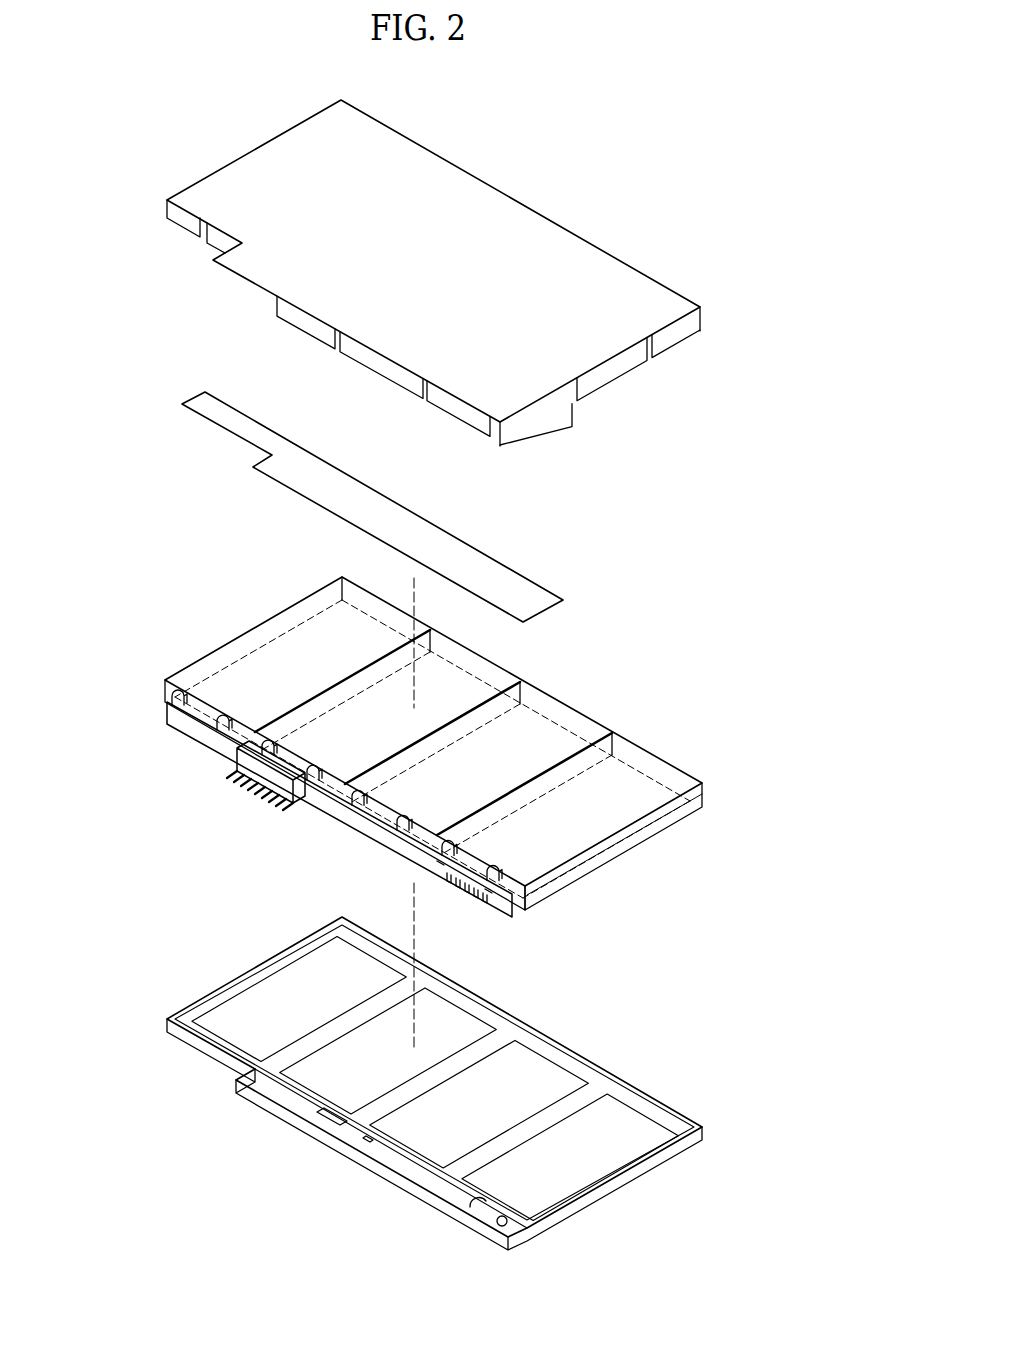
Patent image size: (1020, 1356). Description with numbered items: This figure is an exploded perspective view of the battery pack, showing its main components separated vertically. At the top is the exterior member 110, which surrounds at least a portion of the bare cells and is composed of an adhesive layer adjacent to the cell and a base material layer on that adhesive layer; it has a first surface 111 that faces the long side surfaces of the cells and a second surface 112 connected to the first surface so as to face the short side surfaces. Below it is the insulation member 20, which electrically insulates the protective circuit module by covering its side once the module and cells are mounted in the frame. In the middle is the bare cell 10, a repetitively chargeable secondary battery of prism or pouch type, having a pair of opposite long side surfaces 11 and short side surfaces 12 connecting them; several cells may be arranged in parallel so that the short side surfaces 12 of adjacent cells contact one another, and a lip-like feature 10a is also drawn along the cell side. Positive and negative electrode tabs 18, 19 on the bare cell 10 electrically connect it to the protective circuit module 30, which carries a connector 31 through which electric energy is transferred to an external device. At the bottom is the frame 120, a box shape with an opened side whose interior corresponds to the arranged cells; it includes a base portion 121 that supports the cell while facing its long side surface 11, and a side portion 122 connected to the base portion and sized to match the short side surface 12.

The exterior member 110 is at (435, 273).
The first surface 111 is at (615, 283).
The second surface 112 is at (620, 367).
The insulation member 20 is at (528, 594).
The bare cell 10 is at (418, 775).
The long side surface 11 is at (612, 803).
The frame lip 10a is at (598, 854).
The short side surface 12 is at (532, 914).
The positive electrode tab 18 is at (172, 690).
The negative electrode tab 19 is at (222, 737).
The protective circuit module 30 is at (318, 818).
The connector 31 is at (240, 790).
The frame 120 is at (458, 1114).
The base portion 121 is at (478, 1207).
The side portion 122 is at (617, 1178).